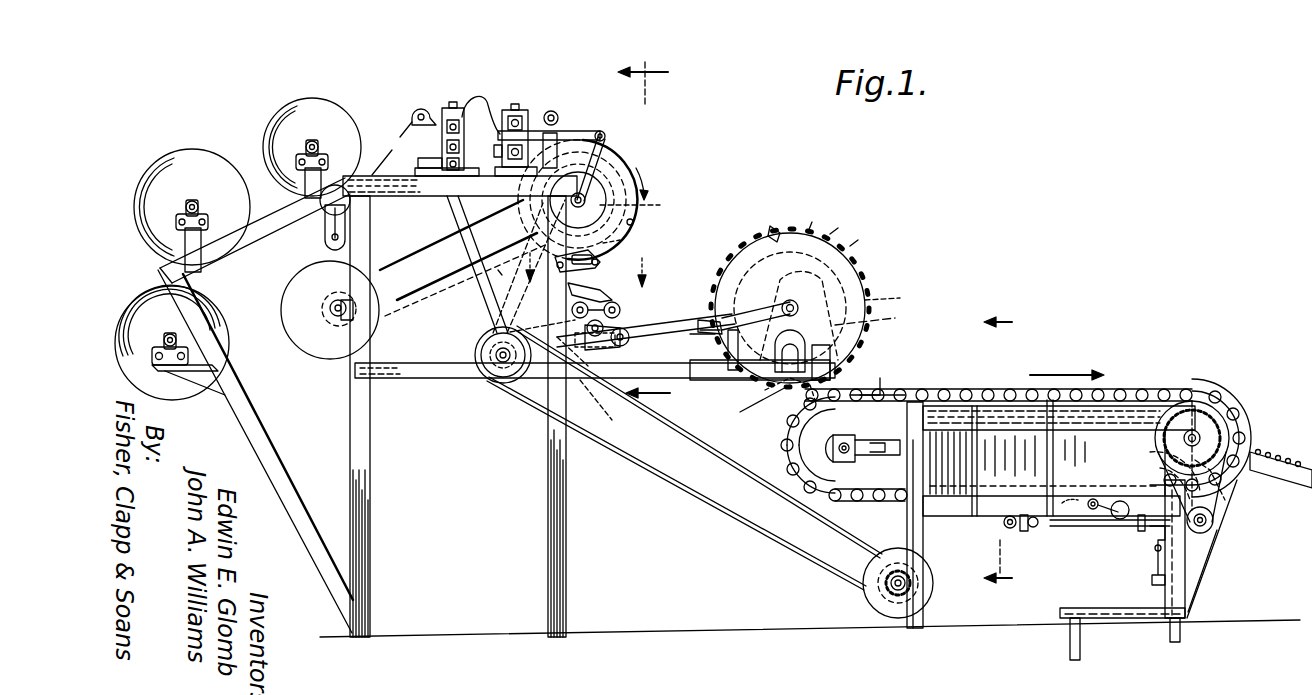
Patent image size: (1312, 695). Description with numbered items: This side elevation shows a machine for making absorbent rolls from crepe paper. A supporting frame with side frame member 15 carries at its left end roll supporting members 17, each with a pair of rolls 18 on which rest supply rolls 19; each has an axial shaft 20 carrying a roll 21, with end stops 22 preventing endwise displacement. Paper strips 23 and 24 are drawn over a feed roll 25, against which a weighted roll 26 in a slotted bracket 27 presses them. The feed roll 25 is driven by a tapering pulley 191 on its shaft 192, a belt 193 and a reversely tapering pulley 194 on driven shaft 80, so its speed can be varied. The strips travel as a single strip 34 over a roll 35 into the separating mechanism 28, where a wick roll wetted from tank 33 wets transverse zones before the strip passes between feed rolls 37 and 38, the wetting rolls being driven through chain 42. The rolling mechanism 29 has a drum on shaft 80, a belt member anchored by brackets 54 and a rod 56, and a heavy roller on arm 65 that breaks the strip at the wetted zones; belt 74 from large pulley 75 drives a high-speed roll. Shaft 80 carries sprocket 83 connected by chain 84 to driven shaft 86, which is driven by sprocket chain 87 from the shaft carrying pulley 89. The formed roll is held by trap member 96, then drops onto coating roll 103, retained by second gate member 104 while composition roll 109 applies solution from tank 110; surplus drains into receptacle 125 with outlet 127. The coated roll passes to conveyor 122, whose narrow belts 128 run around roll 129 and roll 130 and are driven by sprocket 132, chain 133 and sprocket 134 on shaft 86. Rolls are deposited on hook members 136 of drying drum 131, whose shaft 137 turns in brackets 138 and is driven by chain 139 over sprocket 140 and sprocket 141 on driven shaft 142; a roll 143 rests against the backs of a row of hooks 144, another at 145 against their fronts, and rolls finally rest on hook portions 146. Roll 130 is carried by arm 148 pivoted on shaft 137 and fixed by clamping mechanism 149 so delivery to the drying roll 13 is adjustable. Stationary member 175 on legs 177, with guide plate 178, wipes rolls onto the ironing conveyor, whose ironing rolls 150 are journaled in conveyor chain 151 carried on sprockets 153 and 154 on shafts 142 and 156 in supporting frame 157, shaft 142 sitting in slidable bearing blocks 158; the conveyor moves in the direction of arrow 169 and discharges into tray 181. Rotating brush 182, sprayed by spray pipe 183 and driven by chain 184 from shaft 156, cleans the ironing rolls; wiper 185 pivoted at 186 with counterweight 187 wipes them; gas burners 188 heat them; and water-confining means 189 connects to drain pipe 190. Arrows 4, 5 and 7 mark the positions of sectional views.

The section line 4 is at (651, 233).
The section line 5 is at (583, 263).
The section line 7 is at (1005, 451).
The drying roll 13 is at (382, 178).
The side frame member 15 is at (430, 365).
The roll supporting member 17 is at (180, 232).
The rolls 18 is at (177, 218).
The roll of crepe paper 19 is at (252, 132).
The axial shaft 20 is at (195, 202).
The roll 21 is at (187, 202).
The end stop 22 is at (326, 150).
The paper strip 23 is at (255, 230).
The paper strip 24 is at (272, 255).
The feed roll 25 is at (395, 317).
The weighted roll 26 is at (347, 226).
The slotted bracket 27 is at (350, 212).
The sheet separating mechanism 28 is at (441, 108).
The rolling mechanism 29 is at (632, 172).
The tank 33 is at (428, 160).
The single strip 34 is at (385, 160).
The roll 35 is at (416, 112).
The upper feed roll 37 is at (524, 114).
The lower feed roll 38 is at (494, 152).
The chain 42 is at (470, 290).
The bracket 54 is at (606, 150).
The rod 56 is at (592, 262).
The arm 65 is at (482, 98).
The belt 74 is at (576, 128).
The large pulley 75 is at (634, 224).
The driven shaft 80 is at (560, 200).
The sprocket 83 is at (586, 202).
The chain 84 is at (515, 283).
The driven shaft 86 is at (495, 378).
The sprocket chain 87 is at (705, 503).
The pulley 89 is at (870, 588).
The trap member 96 is at (604, 264).
The coating roll 103 is at (620, 304).
The second gate member 104 is at (631, 244).
The composition roll 109 is at (608, 406).
The tank 110 is at (540, 320).
The conveyor 122 is at (686, 318).
The receptacle 125 is at (606, 356).
The outlet 127 is at (695, 336).
The narrow belts 128 is at (713, 345).
The roll 129 is at (760, 362).
The roll 130 is at (700, 335).
The drying drum 131 is at (860, 262).
The sprocket 132 is at (630, 345).
The chain 133 is at (583, 368).
The sprocket 134 is at (510, 368).
The hook members 136 is at (778, 232).
The shaft 137 is at (800, 302).
The brackets 138 is at (790, 300).
The chain 139 is at (880, 317).
The sprocket 140 is at (826, 315).
The sprocket 141 is at (877, 382).
The driven shaft 142 is at (830, 446).
The absorbent roll 143 is at (834, 234).
The row of hooks 144 is at (812, 230).
The roll position 145 is at (852, 246).
The hook portions 146 is at (898, 297).
The arm 148 is at (752, 322).
The clamping mechanism 149 is at (764, 330).
The ironing rolls 150 is at (1180, 385).
The conveyor chain 151 is at (1210, 390).
The sprocket 153 is at (795, 462).
The sprocket 154 is at (1150, 452).
The shaft 156 is at (1200, 436).
The supporting frame 157 is at (908, 520).
The bearing blocks 158 is at (838, 498).
The arrow 169 is at (1075, 370).
The stripping member 175 is at (740, 410).
The legs 177 is at (762, 390).
The guide plate 178 is at (916, 400).
The tray 181 is at (1283, 476).
The rotating brush 182 is at (1228, 543).
The spray pipe 183 is at (1158, 468).
The chain 184 is at (1214, 512).
The wiper 185 is at (1090, 512).
The pivotal mounting 186 is at (1120, 520).
The counterweight 187 is at (1120, 530).
The gas burners 188 is at (1012, 528).
The water confining means 189 is at (1208, 568).
The drain pipe 190 is at (1080, 635).
The tapering pulley 191 is at (336, 316).
The feed roll shaft 192 is at (332, 302).
The belt 193 is at (432, 252).
The reversely tapering pulley 194 is at (647, 205).